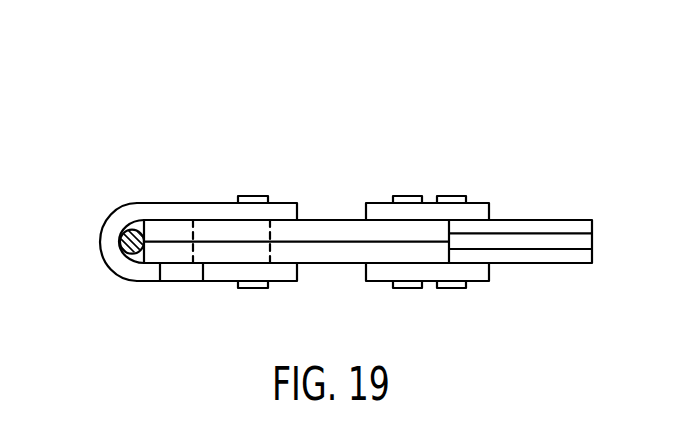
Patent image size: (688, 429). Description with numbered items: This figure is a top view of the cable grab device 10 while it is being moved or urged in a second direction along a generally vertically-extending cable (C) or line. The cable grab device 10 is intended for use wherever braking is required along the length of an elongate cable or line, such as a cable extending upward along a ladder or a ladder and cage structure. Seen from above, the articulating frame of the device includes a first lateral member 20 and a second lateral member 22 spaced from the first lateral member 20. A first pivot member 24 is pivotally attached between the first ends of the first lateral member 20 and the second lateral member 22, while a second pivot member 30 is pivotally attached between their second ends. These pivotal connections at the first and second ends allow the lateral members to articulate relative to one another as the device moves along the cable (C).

The cable grab device 10 is at (411, 138).
The first lateral member 20 is at (180, 208).
The cable c is at (122, 231).
The first pivot member 24 is at (182, 233).
The second lateral member 22 is at (472, 272).
The second pivot member 30 is at (562, 257).